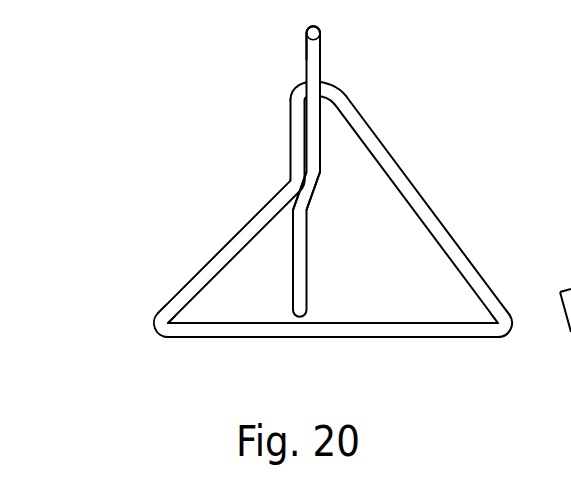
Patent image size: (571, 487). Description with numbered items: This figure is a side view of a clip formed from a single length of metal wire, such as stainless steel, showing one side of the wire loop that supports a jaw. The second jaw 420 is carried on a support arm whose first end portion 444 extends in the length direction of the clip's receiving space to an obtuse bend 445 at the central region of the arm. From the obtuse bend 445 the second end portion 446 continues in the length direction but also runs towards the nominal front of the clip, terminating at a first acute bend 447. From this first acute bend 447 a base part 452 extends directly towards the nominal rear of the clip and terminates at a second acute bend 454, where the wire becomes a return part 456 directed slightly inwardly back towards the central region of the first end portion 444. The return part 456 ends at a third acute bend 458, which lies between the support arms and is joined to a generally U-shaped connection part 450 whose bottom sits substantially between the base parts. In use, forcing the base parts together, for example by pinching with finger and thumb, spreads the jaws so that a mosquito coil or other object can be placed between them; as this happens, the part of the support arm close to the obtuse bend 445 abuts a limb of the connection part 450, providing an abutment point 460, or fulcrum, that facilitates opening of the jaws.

The first end portion of second support arm 444 is at (313, 63).
The obtuse bend 445 is at (320, 167).
The second end portion of second support arm 446 is at (226, 252).
The first acute bend 447 is at (160, 320).
The connection part 450 is at (307, 258).
The base part 452 is at (429, 326).
The second acute bend 454 is at (507, 321).
The return part 456 is at (439, 223).
The third acute bend 458 is at (322, 88).
The abutment point 460 is at (293, 165).
The second jaw 420 is at (545, 280).